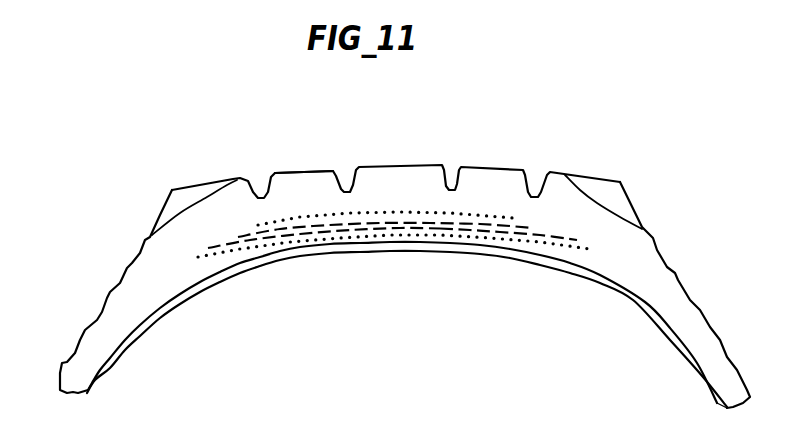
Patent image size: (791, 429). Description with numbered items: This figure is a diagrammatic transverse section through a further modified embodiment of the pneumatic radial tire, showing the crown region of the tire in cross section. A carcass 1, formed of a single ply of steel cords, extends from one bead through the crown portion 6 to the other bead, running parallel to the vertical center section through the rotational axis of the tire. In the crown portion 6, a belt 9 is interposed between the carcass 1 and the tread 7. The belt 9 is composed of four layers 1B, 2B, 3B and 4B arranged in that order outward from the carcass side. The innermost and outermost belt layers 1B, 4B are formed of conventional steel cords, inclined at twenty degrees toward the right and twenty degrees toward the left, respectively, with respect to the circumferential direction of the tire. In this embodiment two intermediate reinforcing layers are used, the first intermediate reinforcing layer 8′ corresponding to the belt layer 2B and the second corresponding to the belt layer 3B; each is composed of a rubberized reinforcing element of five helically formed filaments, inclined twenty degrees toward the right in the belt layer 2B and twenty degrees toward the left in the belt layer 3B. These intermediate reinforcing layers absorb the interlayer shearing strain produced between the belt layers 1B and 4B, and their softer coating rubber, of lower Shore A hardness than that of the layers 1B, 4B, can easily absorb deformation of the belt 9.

The carcass 1 is at (633, 285).
The crown portion 6 is at (374, 165).
The tread 7 is at (308, 187).
The belt 9 is at (199, 231).
The belt layer 1B is at (330, 237).
The belt layer 2B is at (343, 232).
The belt layer 3B is at (360, 227).
The belt layer 4B is at (412, 212).
The intermediate reinforcing layer 8′ is at (443, 230).